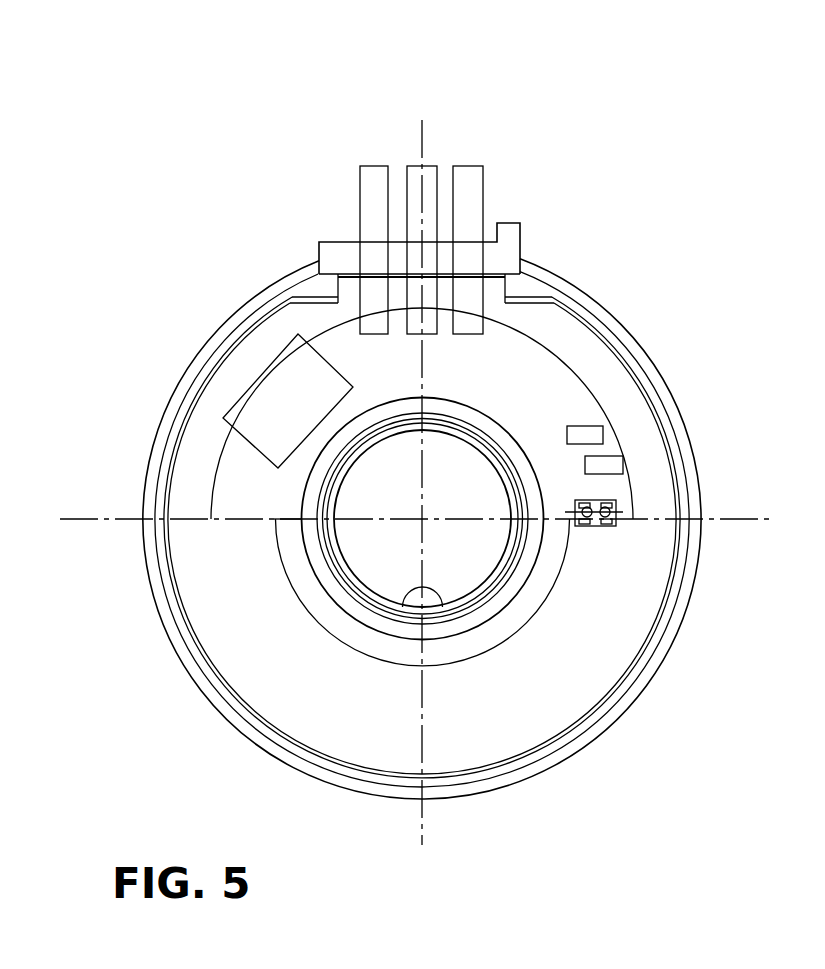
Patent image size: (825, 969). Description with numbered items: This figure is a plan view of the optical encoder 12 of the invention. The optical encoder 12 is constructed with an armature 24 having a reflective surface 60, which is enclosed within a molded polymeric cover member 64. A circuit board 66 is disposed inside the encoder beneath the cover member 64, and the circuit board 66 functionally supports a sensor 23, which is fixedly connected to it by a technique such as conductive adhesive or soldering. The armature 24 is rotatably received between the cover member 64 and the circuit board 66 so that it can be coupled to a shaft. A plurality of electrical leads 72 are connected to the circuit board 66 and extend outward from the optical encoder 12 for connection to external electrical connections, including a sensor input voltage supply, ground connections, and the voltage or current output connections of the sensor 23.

The optical encoder 12 is at (588, 213).
The sensor 23 is at (604, 531).
The armature 24 is at (570, 393).
The reflective surface 60 is at (535, 372).
The cover member 64 is at (632, 697).
The circuit board 66 is at (653, 631).
The electrical leads 72 is at (474, 173).